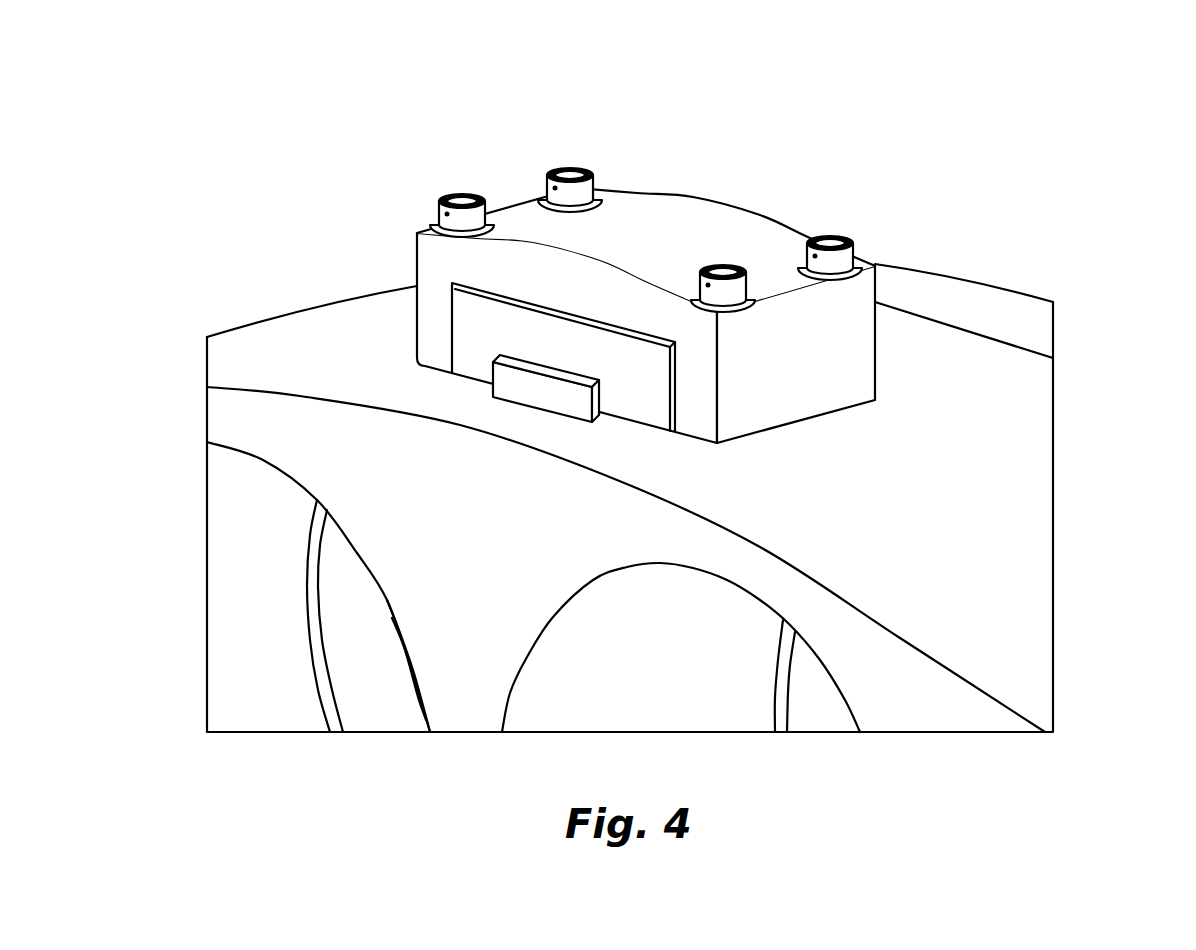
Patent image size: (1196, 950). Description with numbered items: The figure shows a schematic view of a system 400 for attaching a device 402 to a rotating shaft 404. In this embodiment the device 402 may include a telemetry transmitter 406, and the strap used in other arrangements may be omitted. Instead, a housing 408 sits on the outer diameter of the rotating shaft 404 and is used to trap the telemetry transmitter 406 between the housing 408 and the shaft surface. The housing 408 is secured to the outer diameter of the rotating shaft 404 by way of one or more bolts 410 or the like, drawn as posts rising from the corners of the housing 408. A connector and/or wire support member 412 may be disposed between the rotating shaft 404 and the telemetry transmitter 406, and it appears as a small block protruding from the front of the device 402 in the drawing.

The system 400 is at (681, 384).
The device 402 is at (647, 403).
The rotating shaft 404 is at (957, 300).
The telemetry transmitter 406 is at (472, 360).
The housing 408 is at (736, 190).
The bolts 410 is at (567, 165).
The connector and/or wire support member 412 is at (543, 395).